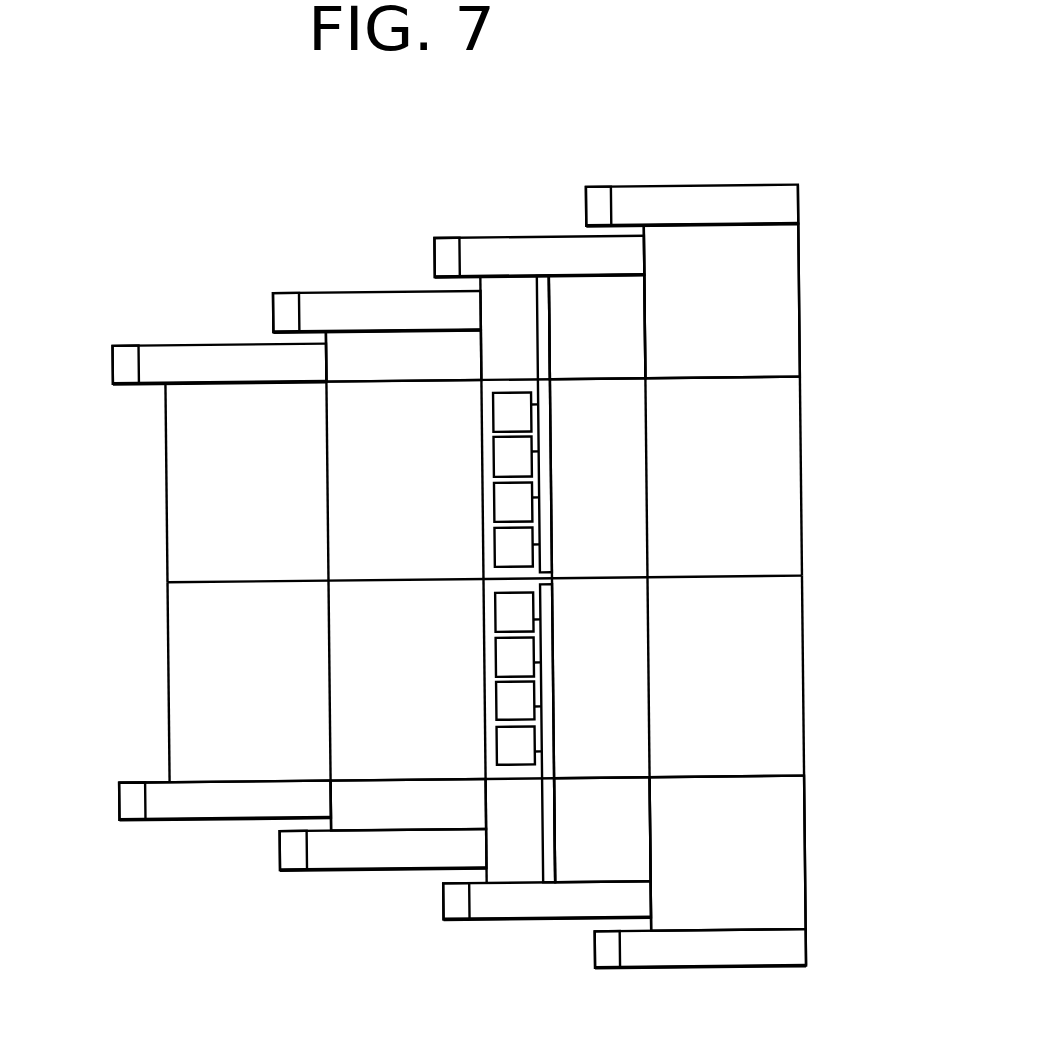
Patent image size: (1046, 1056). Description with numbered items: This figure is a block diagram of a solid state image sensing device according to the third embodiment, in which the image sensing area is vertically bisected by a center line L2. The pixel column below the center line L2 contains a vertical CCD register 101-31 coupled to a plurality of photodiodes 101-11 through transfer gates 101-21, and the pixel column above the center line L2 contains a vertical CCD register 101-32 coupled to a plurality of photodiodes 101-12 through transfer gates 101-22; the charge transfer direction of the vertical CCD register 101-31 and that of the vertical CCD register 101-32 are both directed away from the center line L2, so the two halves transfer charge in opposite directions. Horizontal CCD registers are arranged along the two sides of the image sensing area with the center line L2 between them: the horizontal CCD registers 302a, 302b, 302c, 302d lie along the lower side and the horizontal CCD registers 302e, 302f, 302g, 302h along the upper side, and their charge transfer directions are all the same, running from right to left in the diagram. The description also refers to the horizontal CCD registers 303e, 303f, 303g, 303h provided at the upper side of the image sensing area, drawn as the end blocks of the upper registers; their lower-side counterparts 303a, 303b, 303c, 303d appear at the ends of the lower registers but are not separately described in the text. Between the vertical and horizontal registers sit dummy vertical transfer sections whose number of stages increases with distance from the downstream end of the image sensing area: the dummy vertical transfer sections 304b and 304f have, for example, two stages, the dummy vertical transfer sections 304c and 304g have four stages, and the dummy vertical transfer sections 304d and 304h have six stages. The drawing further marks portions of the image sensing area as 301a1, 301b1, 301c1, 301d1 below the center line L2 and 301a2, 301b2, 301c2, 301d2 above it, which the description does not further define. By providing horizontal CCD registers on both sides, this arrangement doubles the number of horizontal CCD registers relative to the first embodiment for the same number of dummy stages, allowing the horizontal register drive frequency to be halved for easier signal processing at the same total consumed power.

The horizontal CCD register 302a is at (224, 805).
The horizontal CCD register 302b is at (387, 862).
The horizontal CCD register 302c is at (544, 908).
The horizontal CCD register 302d is at (696, 959).
The horizontal CCD register 302e is at (234, 357).
The horizontal CCD register 302f is at (390, 296).
The horizontal CCD register 302g is at (552, 248).
The horizontal CCD register 302h is at (706, 202).
The end block 303a is at (128, 806).
The end block 303b is at (292, 861).
The end block 303c is at (450, 907).
The end block 303d is at (601, 958).
The horizontal CCD register 303e is at (130, 357).
The horizontal CCD register 303f is at (291, 295).
The horizontal CCD register 303g is at (456, 247).
The horizontal CCD register 303h is at (604, 201).
The dummy vertical transfer section 304b is at (409, 805).
The dummy vertical transfer section 304c is at (602, 829).
The dummy vertical transfer section 304d is at (728, 853).
The dummy vertical transfer section 304f is at (404, 356).
The dummy vertical transfer section 304g is at (597, 327).
The dummy vertical transfer section 304h is at (722, 301).
The photodiodes 101-11 is at (501, 611).
The photodiodes 101-12 is at (500, 412).
The transfer gates 101-21 is at (501, 657).
The transfer gates 101-22 is at (500, 458).
The vertical CCD register 101-31 is at (547, 689).
The vertical CCD register 101-32 is at (546, 483).
The boundary line 301a1 is at (180, 626).
The boundary line 301a2 is at (184, 433).
The boundary line 301b1 is at (347, 704).
The boundary line 301b2 is at (346, 506).
The boundary line 301c1 is at (616, 754).
The boundary line 301c2 is at (624, 425).
The boundary line 301d1 is at (781, 656).
The boundary line 301d2 is at (790, 556).
The center line L2 is at (765, 581).